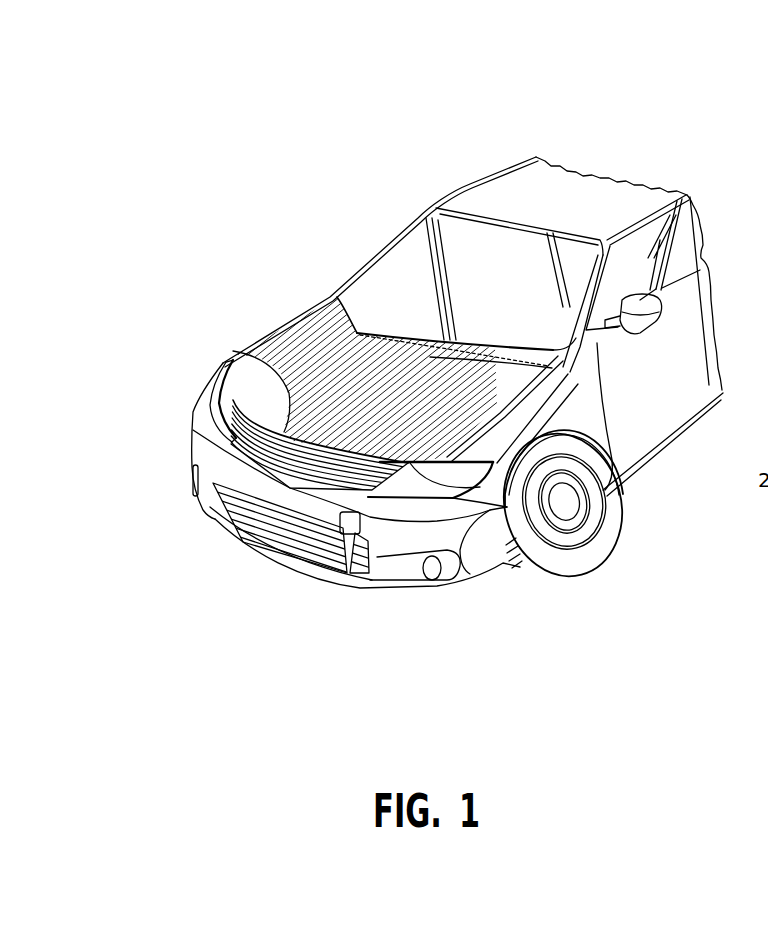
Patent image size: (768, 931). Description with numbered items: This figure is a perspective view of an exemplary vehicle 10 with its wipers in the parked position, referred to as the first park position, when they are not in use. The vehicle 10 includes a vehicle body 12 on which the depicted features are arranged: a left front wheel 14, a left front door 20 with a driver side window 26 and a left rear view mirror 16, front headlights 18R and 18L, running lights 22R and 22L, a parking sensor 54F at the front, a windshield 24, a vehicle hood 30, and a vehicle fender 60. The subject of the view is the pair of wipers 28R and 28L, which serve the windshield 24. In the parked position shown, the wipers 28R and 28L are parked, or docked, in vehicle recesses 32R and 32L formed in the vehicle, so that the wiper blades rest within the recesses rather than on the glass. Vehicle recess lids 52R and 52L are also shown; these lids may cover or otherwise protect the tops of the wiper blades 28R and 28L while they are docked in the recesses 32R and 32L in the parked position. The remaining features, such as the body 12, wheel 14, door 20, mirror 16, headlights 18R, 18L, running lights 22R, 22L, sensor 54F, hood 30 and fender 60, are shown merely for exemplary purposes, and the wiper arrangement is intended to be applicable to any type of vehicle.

The vehicle 10 is at (467, 113).
The vehicle body 12 is at (292, 350).
The left front wheel 14 is at (560, 568).
The left rear view mirror 16 is at (640, 334).
The front headlight 18R is at (208, 383).
The front headlight 18L is at (433, 467).
The left front door 20 is at (658, 422).
The running light 22R is at (193, 472).
The running light 22L is at (433, 580).
The windshield 24 is at (388, 256).
The driver side window 26 is at (665, 245).
The wiper 28R is at (327, 297).
The wiper 28L is at (457, 340).
The vehicle hood 30 is at (240, 353).
The vehicle recess 32R is at (418, 333).
The vehicle recess 32L is at (525, 343).
The vehicle recess lid 52R is at (400, 352).
The vehicle recess lid 52L is at (495, 360).
The parking sensor 54F is at (350, 528).
The vehicle fender 60 is at (252, 497).